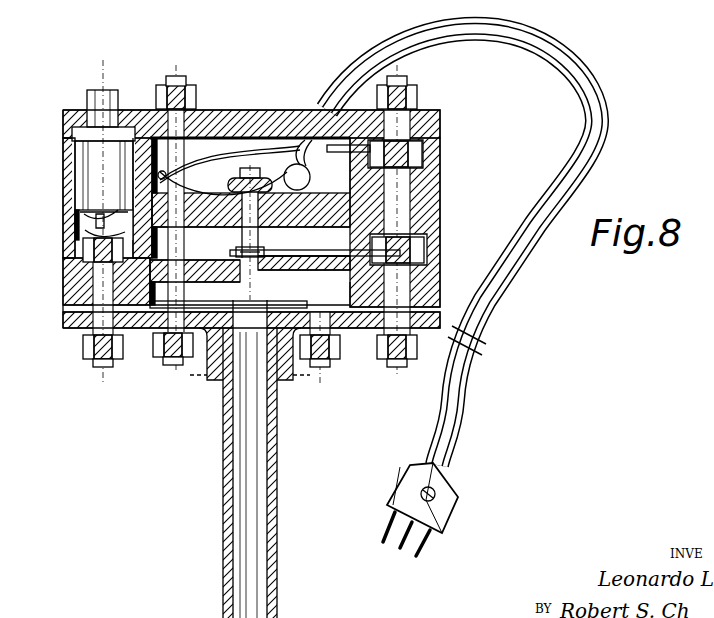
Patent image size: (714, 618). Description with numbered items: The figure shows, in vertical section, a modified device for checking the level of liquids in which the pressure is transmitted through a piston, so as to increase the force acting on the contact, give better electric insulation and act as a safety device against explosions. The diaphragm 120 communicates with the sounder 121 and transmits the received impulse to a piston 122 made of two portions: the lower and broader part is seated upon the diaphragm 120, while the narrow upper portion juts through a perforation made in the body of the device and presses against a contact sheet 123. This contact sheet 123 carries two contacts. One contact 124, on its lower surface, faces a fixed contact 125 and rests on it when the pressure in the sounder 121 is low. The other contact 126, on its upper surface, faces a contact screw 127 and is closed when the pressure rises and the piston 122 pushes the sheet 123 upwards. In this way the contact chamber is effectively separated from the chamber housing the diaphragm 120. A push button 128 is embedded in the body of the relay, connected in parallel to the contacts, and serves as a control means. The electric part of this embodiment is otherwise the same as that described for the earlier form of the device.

The diaphragm 120 is at (338, 313).
The sounder 121 is at (275, 488).
The piston 122 is at (217, 340).
The contact sheet 123 is at (327, 253).
The contact 124 is at (281, 262).
The fixed contact 125 is at (285, 278).
The contact 126 is at (240, 256).
The contact screw 127 is at (262, 188).
The push button 128 is at (97, 217).